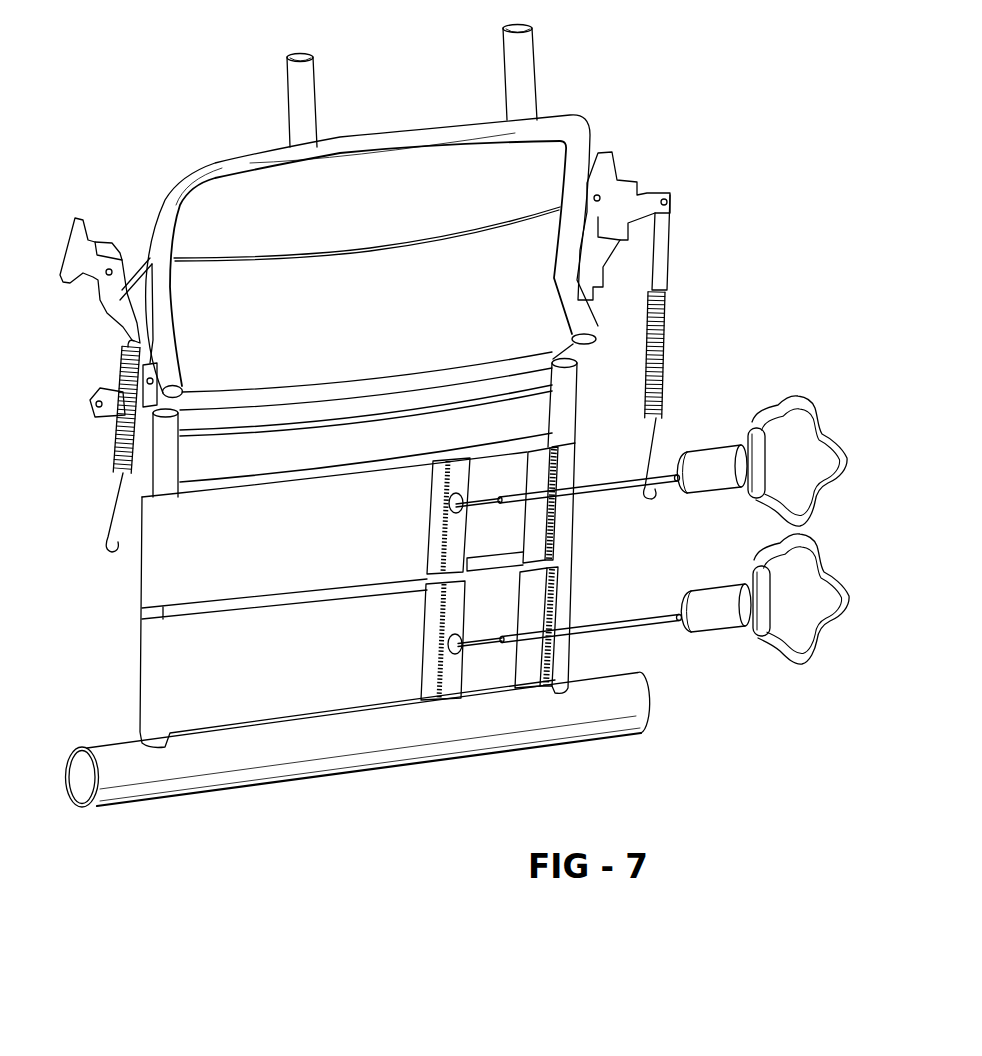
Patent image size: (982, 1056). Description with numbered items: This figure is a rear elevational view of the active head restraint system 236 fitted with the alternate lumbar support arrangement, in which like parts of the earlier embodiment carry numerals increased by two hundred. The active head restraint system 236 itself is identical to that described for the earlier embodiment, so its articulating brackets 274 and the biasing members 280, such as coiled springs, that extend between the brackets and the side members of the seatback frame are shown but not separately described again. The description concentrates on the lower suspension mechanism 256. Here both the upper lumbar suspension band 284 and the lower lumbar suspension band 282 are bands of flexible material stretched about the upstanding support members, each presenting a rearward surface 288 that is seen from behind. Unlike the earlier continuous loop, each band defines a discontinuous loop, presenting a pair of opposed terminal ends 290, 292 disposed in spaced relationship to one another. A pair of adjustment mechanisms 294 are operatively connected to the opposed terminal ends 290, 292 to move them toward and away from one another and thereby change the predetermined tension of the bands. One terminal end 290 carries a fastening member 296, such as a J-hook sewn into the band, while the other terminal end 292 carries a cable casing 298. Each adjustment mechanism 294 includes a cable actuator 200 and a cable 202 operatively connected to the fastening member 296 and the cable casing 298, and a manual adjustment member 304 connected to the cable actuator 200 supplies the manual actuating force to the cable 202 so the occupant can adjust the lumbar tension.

The active head restraint system 236 is at (640, 102).
The articulating bracket 274 is at (604, 268).
The biasing member 280 is at (666, 334).
The upper lumbar suspension band 284 is at (106, 538).
The lower suspension mechanism 256 is at (122, 638).
The lower lumbar suspension band 282 is at (160, 692).
The rearward surface 288 is at (342, 490).
The terminal end 290 is at (448, 527).
The terminal end 292 is at (566, 528).
The adjustment mechanism 294 is at (777, 400).
The fastening member 296 is at (465, 488).
The cable casing 298 is at (533, 685).
The cable actuator 200 is at (710, 458).
The cable 202 is at (603, 484).
The manual adjustment member 304 is at (812, 398).